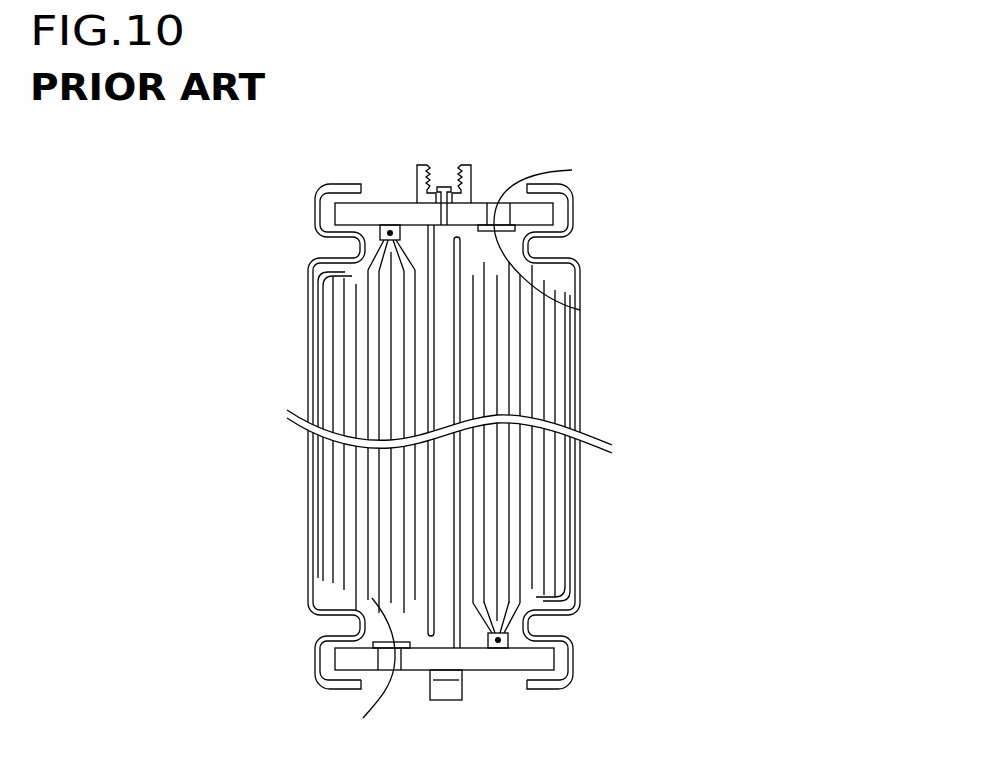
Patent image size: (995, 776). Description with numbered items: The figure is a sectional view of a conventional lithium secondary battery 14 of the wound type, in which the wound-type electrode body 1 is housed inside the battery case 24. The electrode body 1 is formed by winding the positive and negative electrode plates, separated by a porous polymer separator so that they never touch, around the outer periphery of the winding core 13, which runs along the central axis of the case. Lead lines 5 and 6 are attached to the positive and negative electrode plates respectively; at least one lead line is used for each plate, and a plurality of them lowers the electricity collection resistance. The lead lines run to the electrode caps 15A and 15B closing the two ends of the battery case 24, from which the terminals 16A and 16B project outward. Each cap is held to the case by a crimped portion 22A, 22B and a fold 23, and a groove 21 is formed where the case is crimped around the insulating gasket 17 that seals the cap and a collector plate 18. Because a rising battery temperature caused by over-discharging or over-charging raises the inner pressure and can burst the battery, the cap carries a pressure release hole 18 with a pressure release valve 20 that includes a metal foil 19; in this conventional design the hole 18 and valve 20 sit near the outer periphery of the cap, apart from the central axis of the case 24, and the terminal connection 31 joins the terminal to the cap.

The battery 14 is at (586, 144).
The wound-type electrode body 1 is at (543, 357).
The winding core 13 is at (460, 383).
The battery case 24 is at (315, 360).
The upper terminal plate 15A is at (343, 217).
The lower terminal plate 15B is at (536, 660).
The upper terminal 16A is at (418, 190).
The lower terminal 16B is at (456, 684).
The elastic body 17 is at (560, 217).
The pressure release hole 18 is at (473, 453).
The metal foil 19 is at (580, 310).
The pressure release valve 20 is at (489, 193).
The groove 21 is at (552, 247).
The upper crimped portion 22A is at (340, 244).
The lower crimped portion 22B is at (535, 630).
The sealing portion 23 is at (570, 263).
The lead line 5 is at (343, 256).
The lead line 6 is at (572, 614).
The terminal connection 31 is at (443, 212).